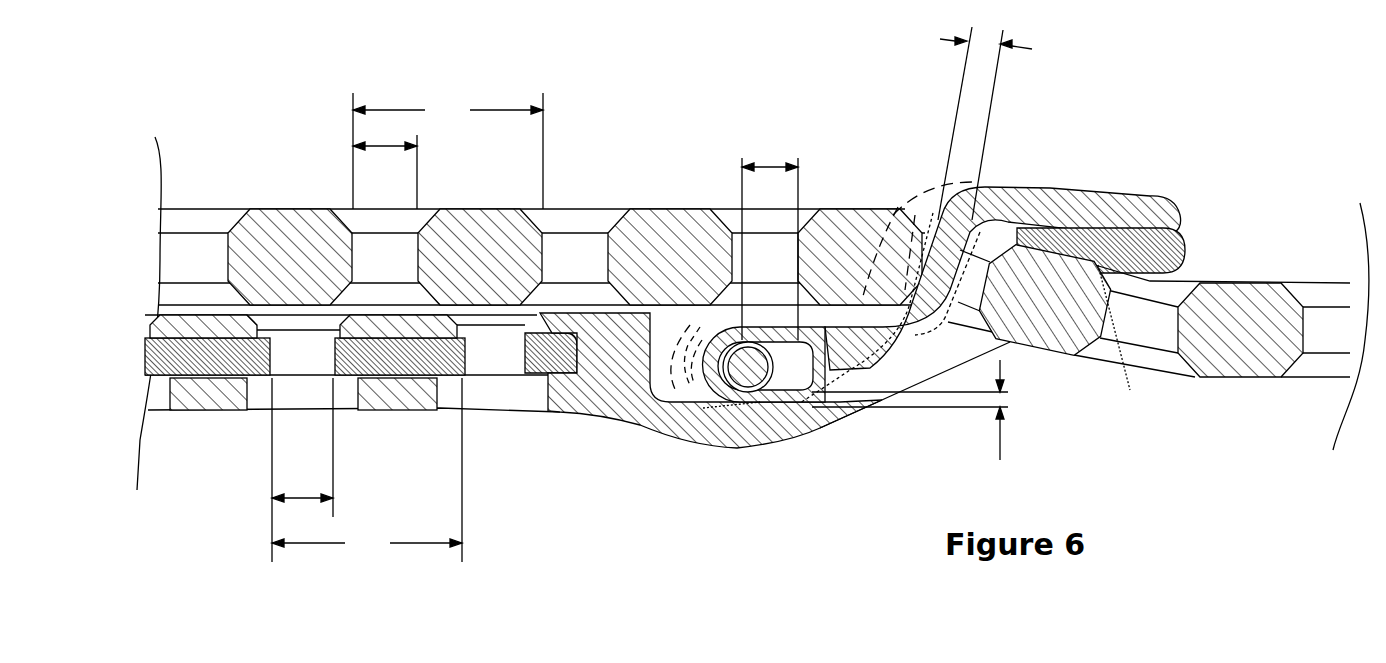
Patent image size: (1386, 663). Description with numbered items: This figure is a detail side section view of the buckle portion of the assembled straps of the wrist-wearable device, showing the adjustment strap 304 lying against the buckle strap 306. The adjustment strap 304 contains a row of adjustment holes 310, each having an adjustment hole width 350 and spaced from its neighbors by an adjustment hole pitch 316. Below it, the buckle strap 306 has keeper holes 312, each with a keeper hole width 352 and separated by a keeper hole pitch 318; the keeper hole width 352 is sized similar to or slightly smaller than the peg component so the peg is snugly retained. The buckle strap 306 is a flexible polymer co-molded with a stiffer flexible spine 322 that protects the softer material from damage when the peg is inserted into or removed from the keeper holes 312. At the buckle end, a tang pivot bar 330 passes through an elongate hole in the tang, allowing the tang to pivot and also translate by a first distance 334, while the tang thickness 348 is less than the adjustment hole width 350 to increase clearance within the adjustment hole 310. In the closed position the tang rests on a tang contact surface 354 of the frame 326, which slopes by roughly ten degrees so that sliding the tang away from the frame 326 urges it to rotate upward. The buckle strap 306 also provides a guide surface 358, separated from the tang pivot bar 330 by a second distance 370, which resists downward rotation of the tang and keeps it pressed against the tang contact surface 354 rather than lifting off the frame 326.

The adjustment strap 304 is at (546, 189).
The buckle strap 306 is at (775, 415).
The adjustment holes 310 is at (767, 256).
The keeper holes 312 is at (497, 360).
The adjustment hole pitch 316 is at (448, 151).
The keeper hole pitch 318 is at (367, 470).
The flexible spine 322 is at (387, 391).
The frame 326 is at (1045, 269).
The tang pivot bar 330 is at (776, 399).
The first distance 334 is at (795, 247).
The tang thickness 348 is at (962, 122).
The adjustment hole width 350 is at (360, 171).
The keeper hole width 352 is at (278, 470).
The tang contact surface 354 is at (1163, 359).
The guide surface 358 is at (765, 364).
The second distance 370 is at (921, 424).